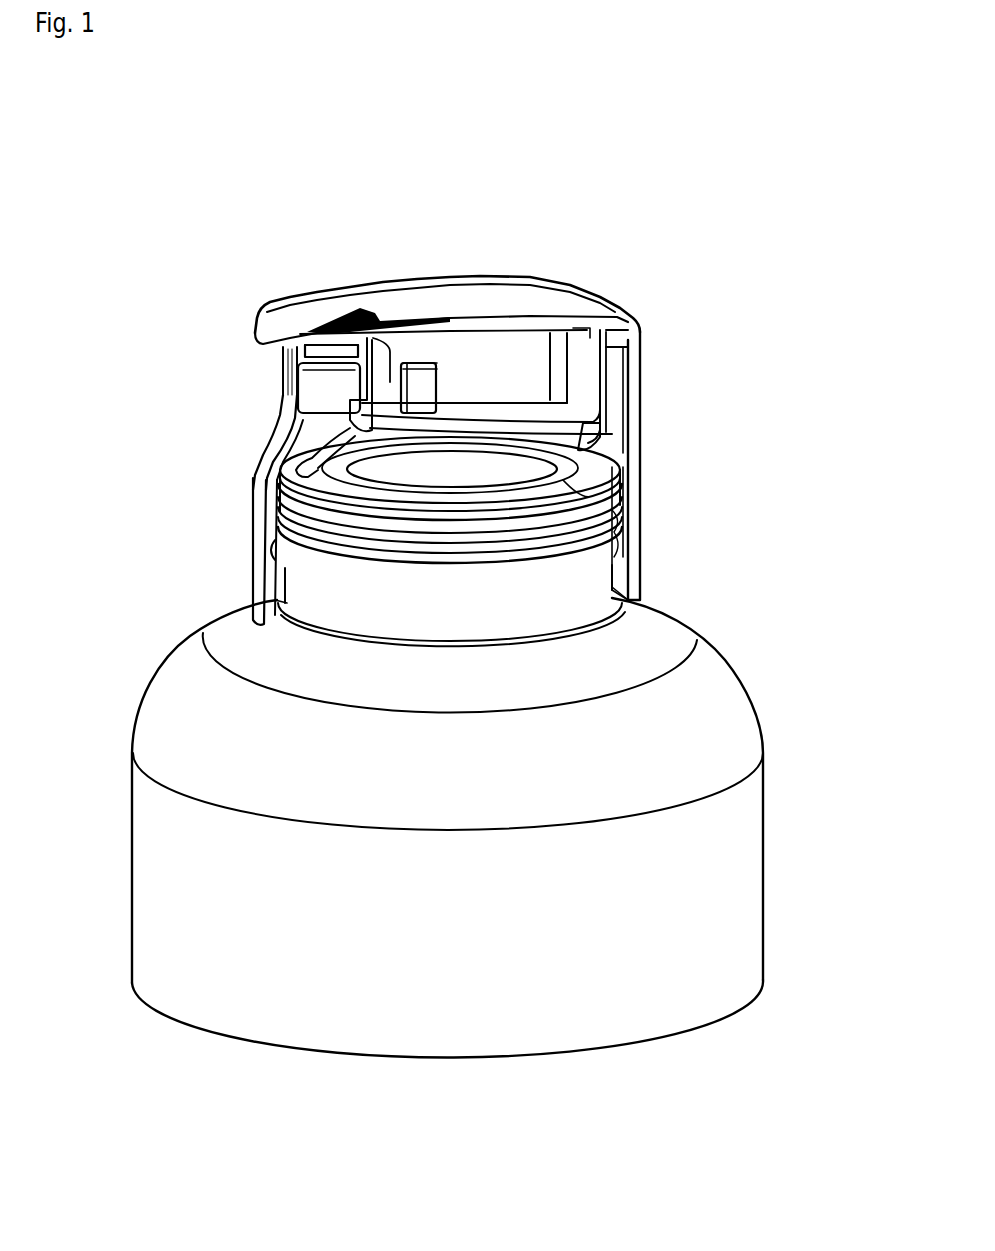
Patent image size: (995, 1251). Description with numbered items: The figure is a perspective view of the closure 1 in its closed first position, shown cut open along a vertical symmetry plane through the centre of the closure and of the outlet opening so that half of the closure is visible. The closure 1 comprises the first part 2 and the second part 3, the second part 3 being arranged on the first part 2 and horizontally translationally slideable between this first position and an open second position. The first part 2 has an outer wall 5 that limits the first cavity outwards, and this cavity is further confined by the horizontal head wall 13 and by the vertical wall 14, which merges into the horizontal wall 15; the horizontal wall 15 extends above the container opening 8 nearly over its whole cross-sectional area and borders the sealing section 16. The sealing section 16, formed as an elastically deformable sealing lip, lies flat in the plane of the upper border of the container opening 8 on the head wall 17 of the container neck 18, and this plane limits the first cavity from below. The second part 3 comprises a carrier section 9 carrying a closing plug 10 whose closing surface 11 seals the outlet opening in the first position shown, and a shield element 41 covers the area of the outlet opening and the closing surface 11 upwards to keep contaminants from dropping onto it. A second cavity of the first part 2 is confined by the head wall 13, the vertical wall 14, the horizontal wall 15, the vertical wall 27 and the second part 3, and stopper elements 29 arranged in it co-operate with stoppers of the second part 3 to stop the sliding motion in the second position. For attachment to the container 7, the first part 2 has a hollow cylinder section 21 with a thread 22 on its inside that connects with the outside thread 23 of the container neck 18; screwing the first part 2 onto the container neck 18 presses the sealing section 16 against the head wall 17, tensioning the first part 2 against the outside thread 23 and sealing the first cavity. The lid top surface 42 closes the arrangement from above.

The closure 1 is at (752, 296).
The first part 2 is at (641, 398).
The second part 3 is at (634, 318).
The outer wall 5 is at (345, 426).
The container 7 is at (740, 700).
The container opening 8 is at (562, 481).
The carrier section 9 is at (418, 378).
The closing plug 10 is at (327, 352).
The closing surface 11 is at (290, 380).
The head wall 13 is at (340, 355).
The vertical wall 14 is at (278, 446).
The horizontal wall 15 is at (513, 417).
The sealing section 16 is at (598, 440).
The head wall of the container neck 17 is at (565, 483).
The container neck 18 is at (590, 568).
The hollow cylinder section 21 is at (253, 518).
The thread 22 is at (270, 558).
The outside thread 23 is at (320, 543).
The vertical wall 27 is at (598, 373).
The stopper elements 29 is at (430, 370).
The shield element 41 is at (280, 345).
The lid top surface 42 is at (482, 301).